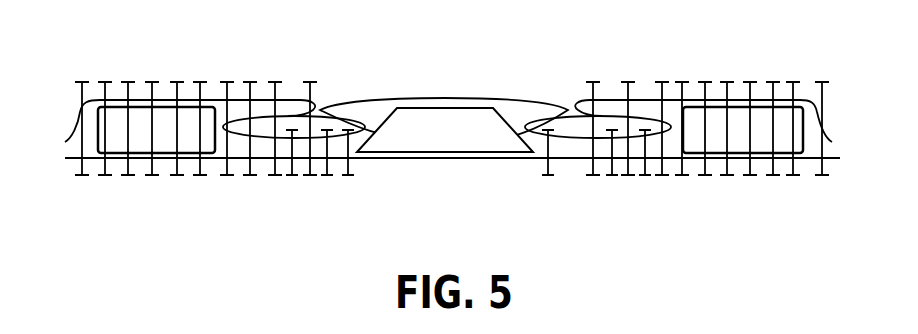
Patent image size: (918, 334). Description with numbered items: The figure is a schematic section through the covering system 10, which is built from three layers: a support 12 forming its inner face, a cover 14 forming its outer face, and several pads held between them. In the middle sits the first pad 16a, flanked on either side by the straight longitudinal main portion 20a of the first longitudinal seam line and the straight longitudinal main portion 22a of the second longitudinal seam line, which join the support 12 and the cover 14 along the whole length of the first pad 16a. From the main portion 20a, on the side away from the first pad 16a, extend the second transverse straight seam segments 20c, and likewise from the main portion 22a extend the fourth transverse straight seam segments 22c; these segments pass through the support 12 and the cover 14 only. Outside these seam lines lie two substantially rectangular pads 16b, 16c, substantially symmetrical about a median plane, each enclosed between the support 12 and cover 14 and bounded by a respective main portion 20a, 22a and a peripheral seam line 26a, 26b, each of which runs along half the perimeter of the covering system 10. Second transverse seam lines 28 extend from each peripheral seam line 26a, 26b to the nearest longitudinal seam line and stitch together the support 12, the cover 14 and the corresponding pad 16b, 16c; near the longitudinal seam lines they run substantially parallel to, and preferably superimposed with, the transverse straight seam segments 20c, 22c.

The covering system 10 is at (845, 100).
The support 12 is at (467, 160).
The cover 14 is at (529, 100).
The first pad 16a is at (440, 130).
The second pad 16b is at (168, 133).
The third pad 16c is at (737, 133).
The longitudinal main portion 20a is at (328, 129).
The second transverse straight seam segment 20c is at (296, 129).
The longitudinal main portion 22a is at (613, 176).
The fourth transverse straight seam segment 22c is at (647, 176).
The peripheral seam line 26a is at (78, 176).
The peripheral seam line 26b is at (823, 176).
The second transverse seam lines 28 is at (205, 82).